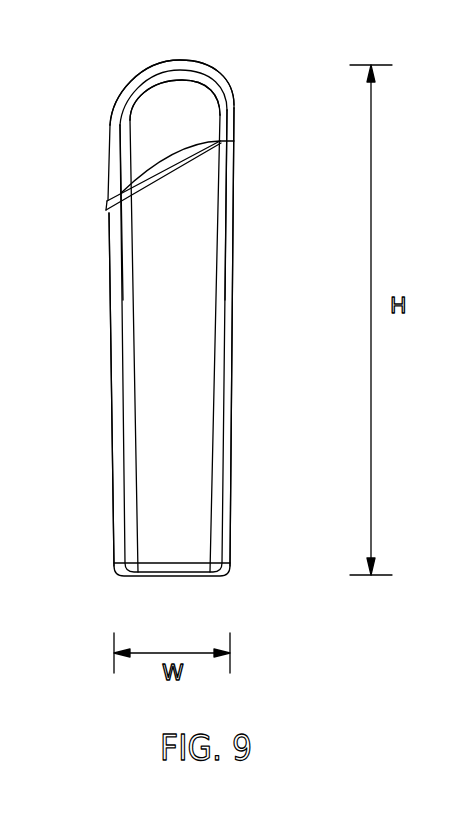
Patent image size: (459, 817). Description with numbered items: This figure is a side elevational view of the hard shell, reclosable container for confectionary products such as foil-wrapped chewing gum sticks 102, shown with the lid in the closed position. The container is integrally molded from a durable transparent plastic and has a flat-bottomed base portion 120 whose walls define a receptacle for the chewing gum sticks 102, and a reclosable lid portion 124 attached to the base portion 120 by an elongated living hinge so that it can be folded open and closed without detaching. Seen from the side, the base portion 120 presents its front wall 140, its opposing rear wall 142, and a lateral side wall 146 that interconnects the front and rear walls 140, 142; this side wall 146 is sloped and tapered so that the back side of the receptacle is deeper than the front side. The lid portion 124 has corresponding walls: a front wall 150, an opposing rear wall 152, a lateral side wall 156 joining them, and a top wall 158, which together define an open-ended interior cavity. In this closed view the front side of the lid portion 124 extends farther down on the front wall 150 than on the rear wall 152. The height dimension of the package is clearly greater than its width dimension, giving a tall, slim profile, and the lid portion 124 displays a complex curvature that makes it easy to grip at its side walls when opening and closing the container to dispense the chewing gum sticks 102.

The chewing gum sticks 102 is at (133, 197).
The base portion 120 is at (254, 226).
The reclosable lid portion 124 is at (247, 68).
The front wall 140 is at (116, 345).
The rear wall 142 is at (235, 377).
The lateral side wall 146 is at (193, 313).
The front wall 150 is at (124, 132).
The rear wall 152 is at (232, 113).
The lateral side wall 156 is at (163, 108).
The top wall 158 is at (187, 60).